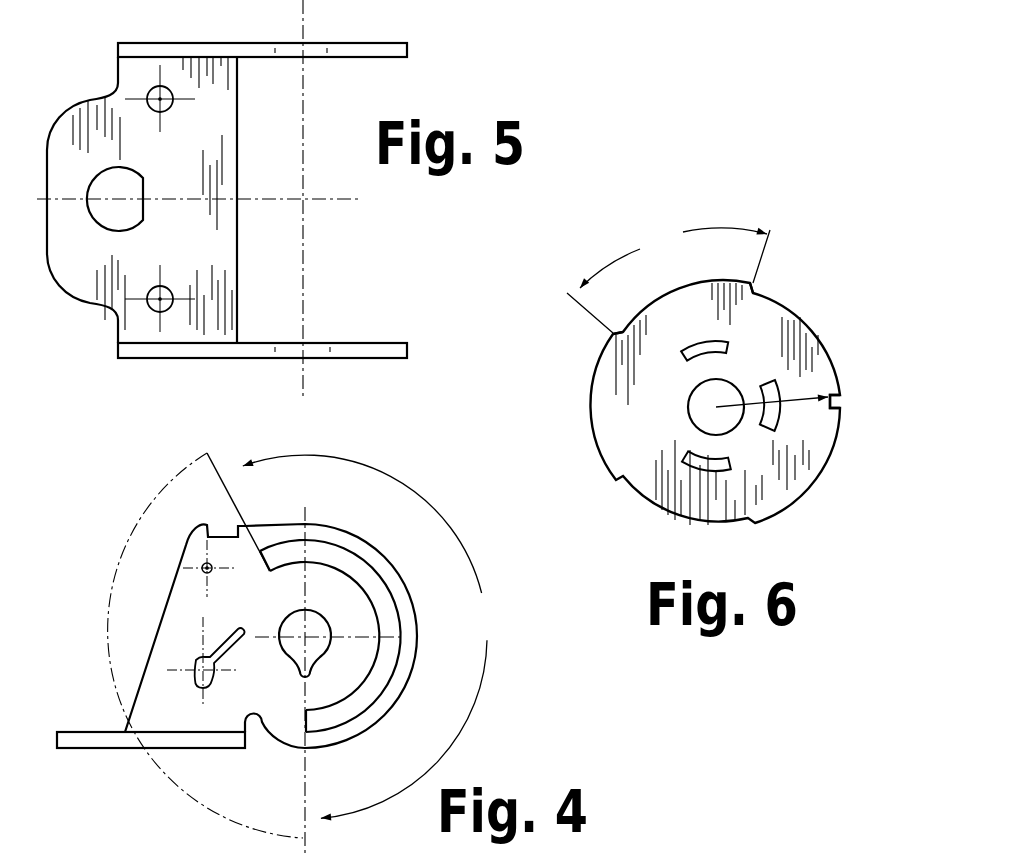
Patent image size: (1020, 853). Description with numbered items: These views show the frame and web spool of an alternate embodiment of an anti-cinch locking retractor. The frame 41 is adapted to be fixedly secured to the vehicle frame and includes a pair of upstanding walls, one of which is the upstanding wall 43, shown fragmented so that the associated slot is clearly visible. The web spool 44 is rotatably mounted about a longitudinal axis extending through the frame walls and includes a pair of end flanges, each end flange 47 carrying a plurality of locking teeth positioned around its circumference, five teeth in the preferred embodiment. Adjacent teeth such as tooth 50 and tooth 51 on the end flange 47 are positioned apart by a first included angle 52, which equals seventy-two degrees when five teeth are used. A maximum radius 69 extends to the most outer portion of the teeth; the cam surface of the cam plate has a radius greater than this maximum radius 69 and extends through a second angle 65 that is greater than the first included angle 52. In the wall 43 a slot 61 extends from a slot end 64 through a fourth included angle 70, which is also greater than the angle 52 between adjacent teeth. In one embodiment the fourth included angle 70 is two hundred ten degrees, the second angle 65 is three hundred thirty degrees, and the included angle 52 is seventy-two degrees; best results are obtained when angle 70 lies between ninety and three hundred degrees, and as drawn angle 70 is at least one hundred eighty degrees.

In FIG. 5, the frame 41 is at (190, 72).
In FIG. 4, the frame 41 is at (78, 732).
In FIG. 4, the upstanding wall 43 is at (182, 613).
In FIG. 6, the web spool 44 is at (796, 222).
In FIG. 6, the end flange 47 is at (797, 341).
In FIG. 6, the tooth 50 is at (613, 333).
In FIG. 6, the tooth 51 is at (754, 292).
In FIG. 6, the first included angle 52 is at (668, 280).
In FIG. 4, the slot 61 is at (354, 567).
In FIG. 4, the slot end 64 is at (313, 722).
In FIG. 4, the second angle 65 is at (282, 522).
In FIG. 6, the maximum radius 69 is at (796, 404).
In FIG. 4, the fourth included angle 70 is at (302, 645).